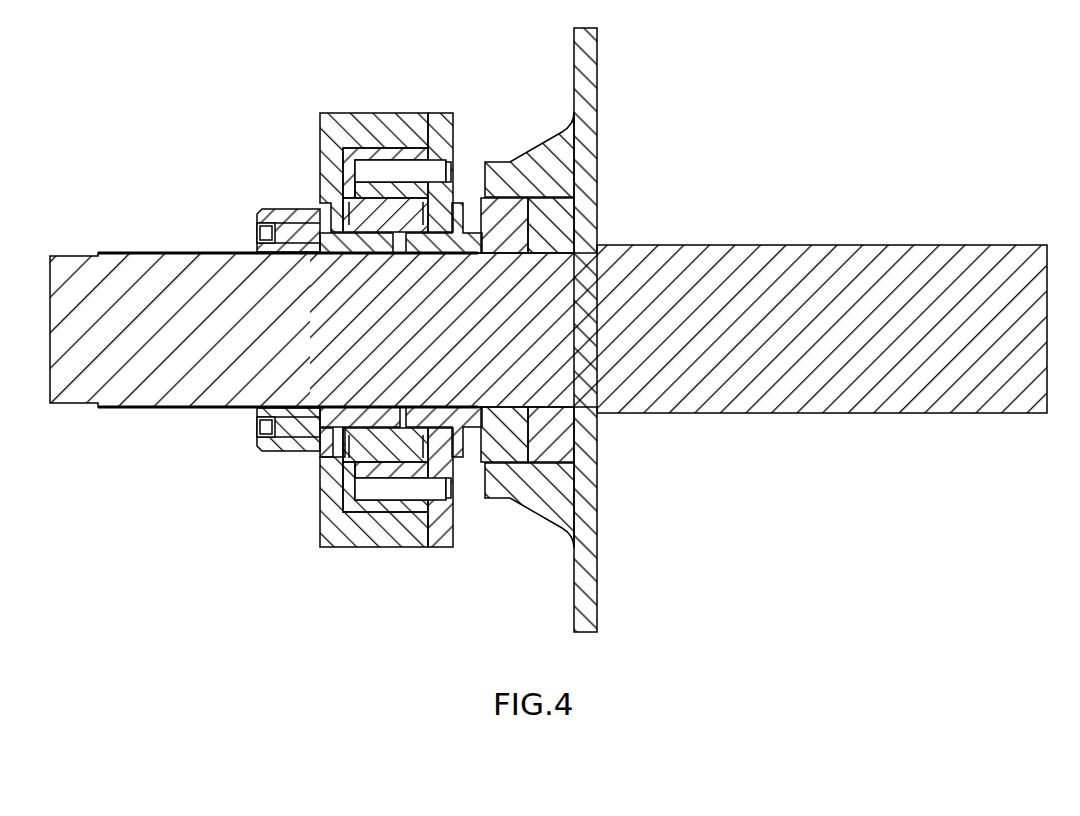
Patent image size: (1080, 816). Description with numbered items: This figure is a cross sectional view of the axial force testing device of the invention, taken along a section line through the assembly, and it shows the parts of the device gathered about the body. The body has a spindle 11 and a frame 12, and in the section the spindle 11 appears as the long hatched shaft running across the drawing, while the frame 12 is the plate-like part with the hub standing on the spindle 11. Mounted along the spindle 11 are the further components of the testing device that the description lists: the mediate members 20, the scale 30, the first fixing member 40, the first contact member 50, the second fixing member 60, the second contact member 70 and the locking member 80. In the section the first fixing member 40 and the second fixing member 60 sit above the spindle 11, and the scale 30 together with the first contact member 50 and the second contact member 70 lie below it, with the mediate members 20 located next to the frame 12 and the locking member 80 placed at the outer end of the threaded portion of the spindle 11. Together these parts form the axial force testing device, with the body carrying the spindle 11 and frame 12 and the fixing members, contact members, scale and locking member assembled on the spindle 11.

The spindle 11 is at (980, 405).
The frame 12 is at (588, 128).
The mediate members 20 is at (558, 220).
The scale 30 is at (350, 520).
The first fixing member 40 is at (388, 112).
The first contact member 50 is at (320, 453).
The second fixing member 60 is at (445, 113).
The second contact member 70 is at (465, 458).
The locking member 80 is at (270, 213).